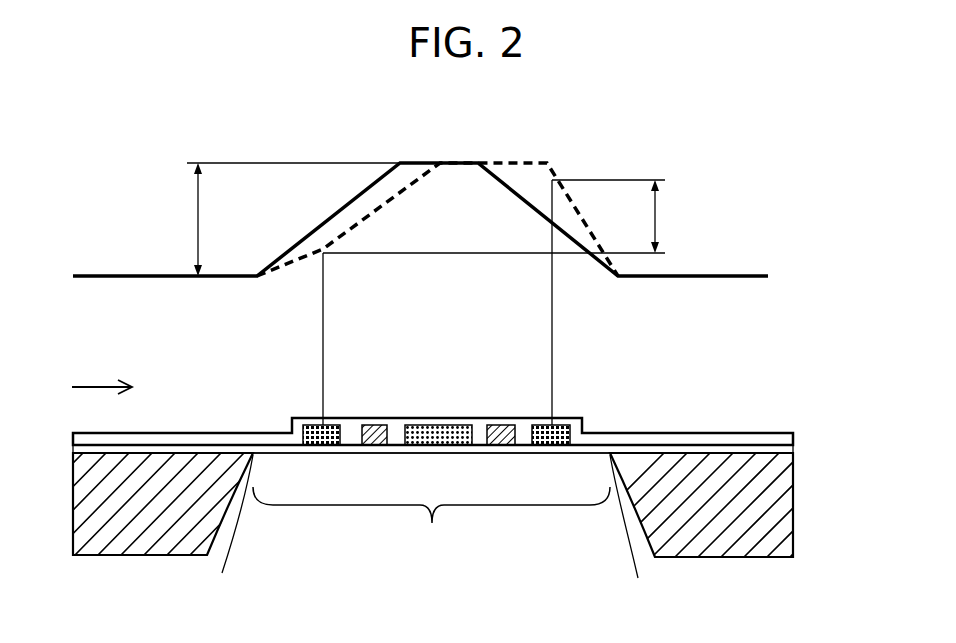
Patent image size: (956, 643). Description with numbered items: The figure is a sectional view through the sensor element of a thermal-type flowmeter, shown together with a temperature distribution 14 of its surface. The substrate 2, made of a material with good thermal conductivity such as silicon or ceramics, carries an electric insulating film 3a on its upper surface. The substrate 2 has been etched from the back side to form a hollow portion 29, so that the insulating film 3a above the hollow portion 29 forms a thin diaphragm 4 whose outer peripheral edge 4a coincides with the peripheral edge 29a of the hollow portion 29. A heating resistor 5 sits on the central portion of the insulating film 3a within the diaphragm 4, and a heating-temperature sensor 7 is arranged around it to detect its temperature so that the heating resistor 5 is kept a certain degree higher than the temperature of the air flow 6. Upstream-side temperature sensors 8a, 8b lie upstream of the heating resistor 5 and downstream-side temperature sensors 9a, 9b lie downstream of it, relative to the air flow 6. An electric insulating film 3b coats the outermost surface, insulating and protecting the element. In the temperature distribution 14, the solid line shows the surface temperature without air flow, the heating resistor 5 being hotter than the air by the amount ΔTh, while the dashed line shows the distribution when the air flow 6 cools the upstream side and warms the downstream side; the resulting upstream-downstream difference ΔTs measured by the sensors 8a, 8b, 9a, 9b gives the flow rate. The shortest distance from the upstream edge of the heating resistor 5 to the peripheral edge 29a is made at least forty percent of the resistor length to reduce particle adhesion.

The substrate 2 is at (793, 510).
The electric insulating film 3a is at (793, 450).
The electric insulating film 3b is at (793, 437).
The diaphragm 4 is at (431, 525).
The outer peripheral edge of diaphragm 4a is at (424, 536).
The heating resistor 5 is at (436, 424).
The air flow 6 is at (88, 384).
The heating-temperature sensor 7 is at (375, 424).
The upstream-side temperature sensor 8a is at (315, 424).
The upstream-side temperature sensor 8b is at (277, 394).
The downstream-side temperature sensor 9a is at (558, 424).
The downstream-side temperature sensor 9b is at (597, 394).
The temperature distribution 14 is at (90, 272).
The hollow portion 29 is at (378, 538).
The peripheral edge of hollow portion 29a is at (424, 536).